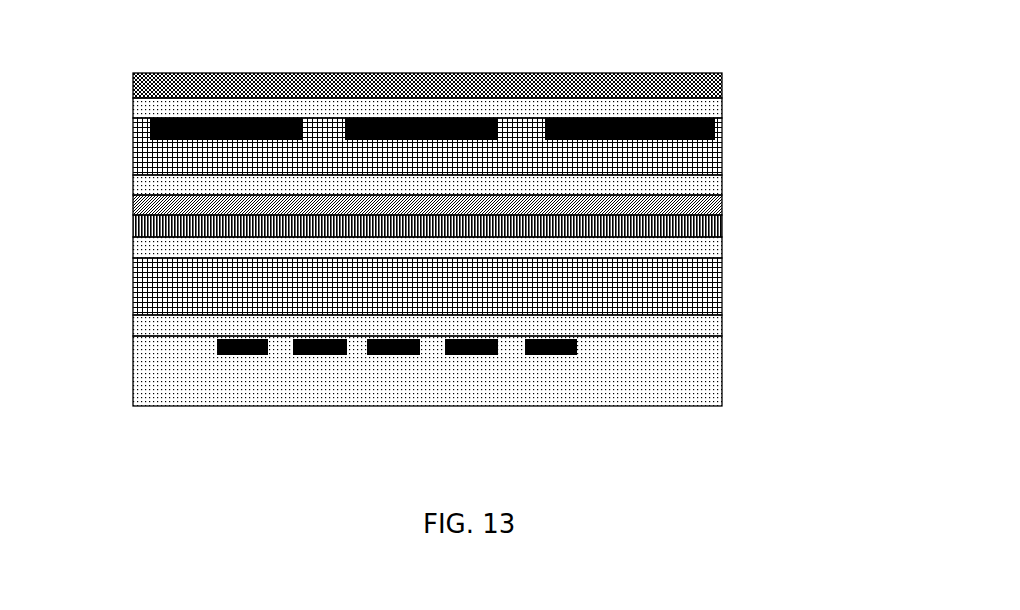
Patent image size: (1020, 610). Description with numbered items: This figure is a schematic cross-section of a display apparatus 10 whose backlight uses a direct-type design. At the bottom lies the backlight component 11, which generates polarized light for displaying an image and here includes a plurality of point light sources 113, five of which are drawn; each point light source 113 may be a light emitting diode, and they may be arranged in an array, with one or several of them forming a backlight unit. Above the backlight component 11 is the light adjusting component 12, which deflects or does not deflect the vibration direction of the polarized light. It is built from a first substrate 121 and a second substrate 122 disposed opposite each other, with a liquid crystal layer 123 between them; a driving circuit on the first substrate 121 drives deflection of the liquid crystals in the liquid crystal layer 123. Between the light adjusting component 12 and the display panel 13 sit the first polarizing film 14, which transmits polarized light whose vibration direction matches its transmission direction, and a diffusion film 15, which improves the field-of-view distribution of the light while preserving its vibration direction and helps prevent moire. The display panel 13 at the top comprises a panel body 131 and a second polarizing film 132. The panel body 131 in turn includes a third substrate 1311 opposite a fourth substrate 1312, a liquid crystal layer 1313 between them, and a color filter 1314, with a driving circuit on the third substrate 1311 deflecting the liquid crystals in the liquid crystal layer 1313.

The display apparatus 10 is at (148, 38).
The backlight component 11 is at (153, 363).
The point light source 113 is at (553, 355).
The light adjusting component 12 is at (120, 242).
The first substrate 121 is at (708, 248).
The second substrate 122 is at (708, 322).
The liquid crystal layer 123 is at (708, 288).
The display panel 13 is at (120, 73).
The panel body 131 is at (848, 100).
The third substrate 1311 is at (708, 107).
The fourth substrate 1312 is at (708, 185).
The liquid crystal layer 1313 is at (708, 160).
The color filter 1314 is at (708, 135).
The second polarizing film 132 is at (722, 74).
The first polarizing film 14 is at (130, 214).
The diffusion film 15 is at (130, 232).